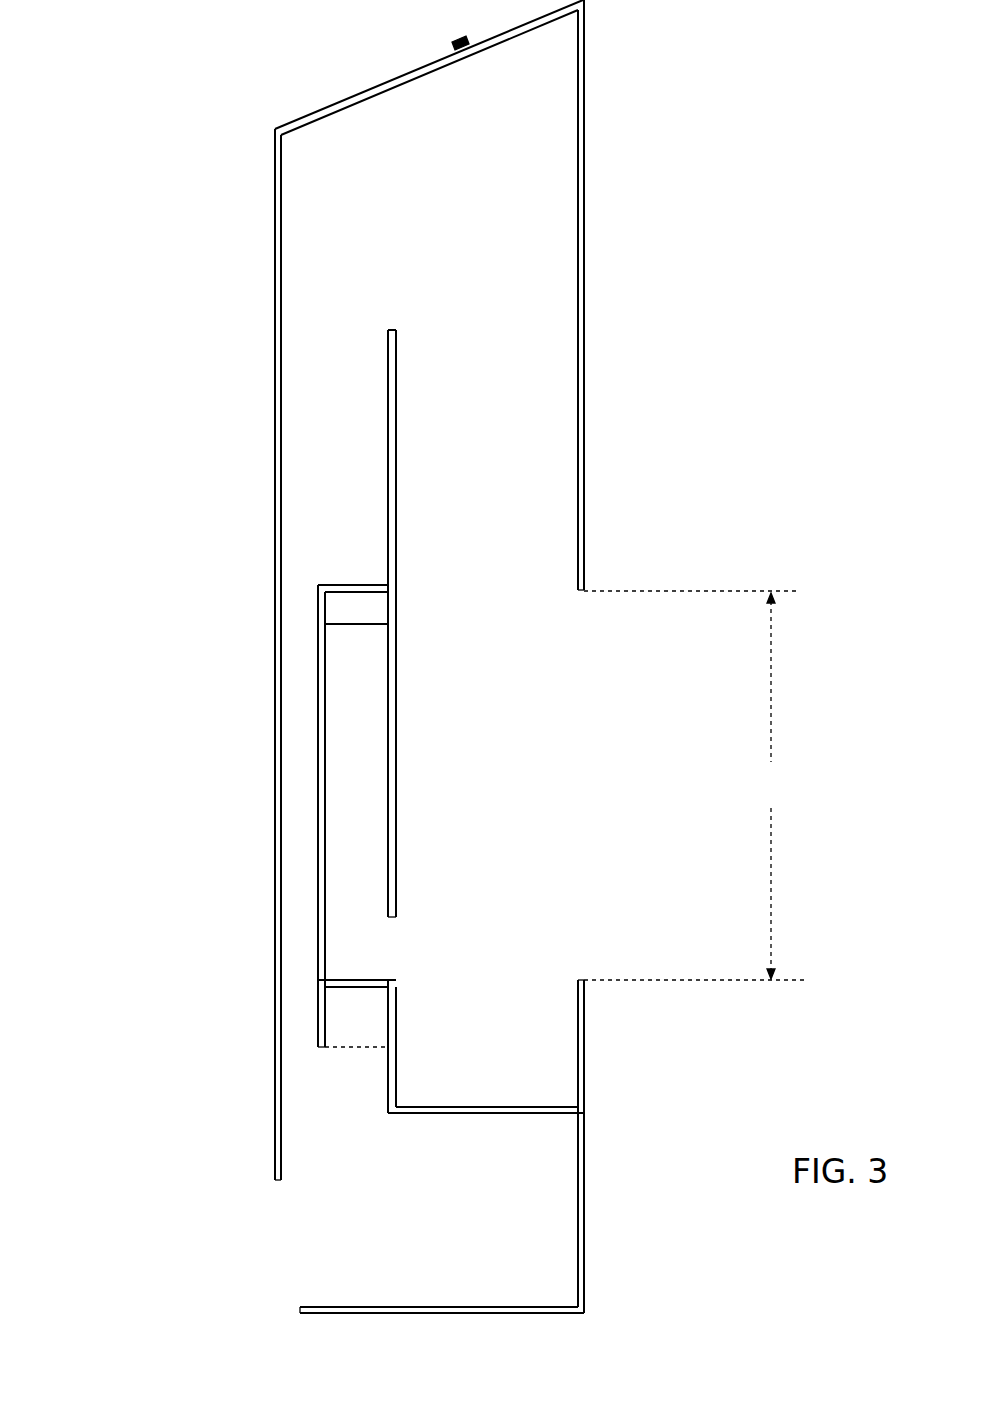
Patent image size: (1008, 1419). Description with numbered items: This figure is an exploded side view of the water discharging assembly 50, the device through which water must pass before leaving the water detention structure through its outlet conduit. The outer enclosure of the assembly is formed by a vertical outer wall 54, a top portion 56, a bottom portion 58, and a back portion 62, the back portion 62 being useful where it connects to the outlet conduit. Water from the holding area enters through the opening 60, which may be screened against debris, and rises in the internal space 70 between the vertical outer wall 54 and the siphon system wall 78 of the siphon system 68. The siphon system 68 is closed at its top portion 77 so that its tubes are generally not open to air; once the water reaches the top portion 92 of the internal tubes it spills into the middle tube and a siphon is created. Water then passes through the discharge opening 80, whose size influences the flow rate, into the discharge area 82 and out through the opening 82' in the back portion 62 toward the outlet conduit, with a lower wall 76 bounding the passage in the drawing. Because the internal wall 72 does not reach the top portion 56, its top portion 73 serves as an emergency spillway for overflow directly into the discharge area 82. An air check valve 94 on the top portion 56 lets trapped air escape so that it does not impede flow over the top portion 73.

The water discharging assembly 50 is at (142, 293).
The vertical outer wall 54 is at (272, 508).
The top portion 56 is at (373, 90).
The bottom portion 58 is at (470, 1318).
The opening 60 is at (260, 1218).
The back portion 62 is at (588, 345).
The siphon system 68 is at (357, 738).
The internal space 70 is at (337, 496).
The internal wall 72 is at (396, 405).
The top portion of internal wall 73 is at (396, 330).
The lower channel wall 76 is at (472, 1113).
The top portion of siphon system 77 is at (360, 588).
The siphon system wall 78 is at (322, 910).
The discharge opening 80 is at (397, 951).
The discharge area 82 is at (662, 785).
The opening 82' is at (772, 786).
The top portion of internal tubes 92 is at (360, 625).
The air check valve 94 is at (454, 48).